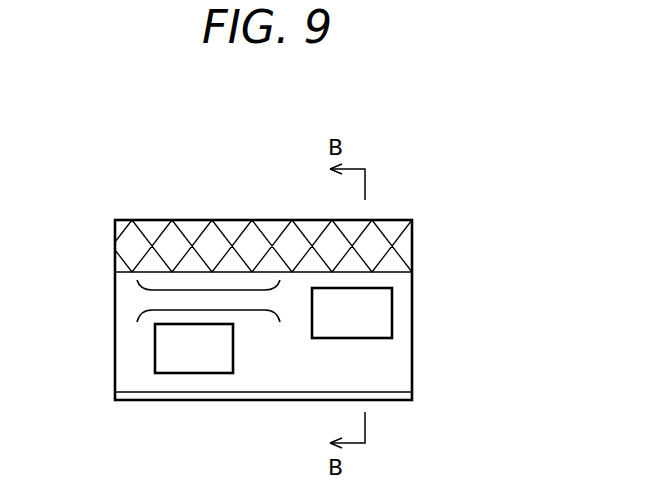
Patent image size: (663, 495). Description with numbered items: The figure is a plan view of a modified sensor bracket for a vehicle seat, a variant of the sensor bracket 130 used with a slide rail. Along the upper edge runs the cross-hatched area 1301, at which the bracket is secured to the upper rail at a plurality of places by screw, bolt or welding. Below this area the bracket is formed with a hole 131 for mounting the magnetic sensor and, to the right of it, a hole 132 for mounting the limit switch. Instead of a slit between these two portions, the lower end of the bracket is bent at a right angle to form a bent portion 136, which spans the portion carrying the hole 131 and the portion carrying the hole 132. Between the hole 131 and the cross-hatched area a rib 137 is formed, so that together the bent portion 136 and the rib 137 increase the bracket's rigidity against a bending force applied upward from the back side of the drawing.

The sensor bracket 130 is at (397, 220).
The cross-hatched area 1301 is at (257, 240).
The rib 137 is at (200, 300).
The hole 131 is at (155, 350).
The hole 132 is at (392, 312).
The bent portion 136 is at (230, 399).